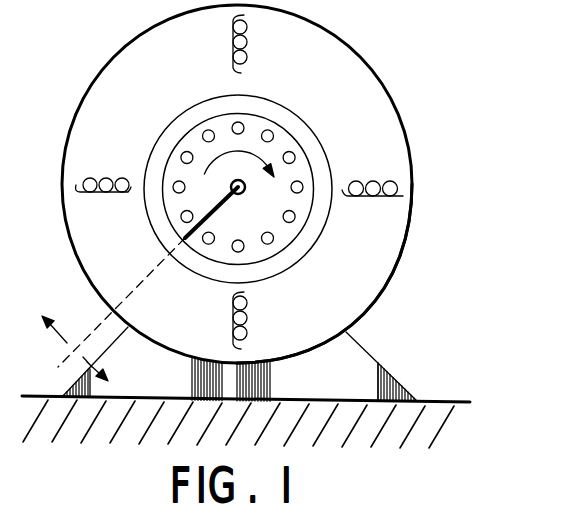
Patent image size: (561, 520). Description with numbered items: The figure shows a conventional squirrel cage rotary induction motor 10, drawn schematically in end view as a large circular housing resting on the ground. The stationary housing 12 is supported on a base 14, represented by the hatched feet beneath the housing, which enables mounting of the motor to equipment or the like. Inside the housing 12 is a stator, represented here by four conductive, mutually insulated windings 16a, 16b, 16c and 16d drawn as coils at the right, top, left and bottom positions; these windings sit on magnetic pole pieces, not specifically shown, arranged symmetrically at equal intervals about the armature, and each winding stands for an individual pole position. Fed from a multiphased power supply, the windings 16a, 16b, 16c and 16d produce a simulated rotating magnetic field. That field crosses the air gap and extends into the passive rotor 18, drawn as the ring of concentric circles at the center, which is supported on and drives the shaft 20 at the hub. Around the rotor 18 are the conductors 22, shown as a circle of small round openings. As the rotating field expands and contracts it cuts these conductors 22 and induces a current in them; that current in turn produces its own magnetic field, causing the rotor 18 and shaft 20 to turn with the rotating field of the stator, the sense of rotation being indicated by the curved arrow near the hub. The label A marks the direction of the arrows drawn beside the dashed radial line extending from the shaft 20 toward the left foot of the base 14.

The rotary induction motor 10 is at (403, 90).
The stationary housing 12 is at (395, 279).
The base 14 is at (370, 370).
The winding 16a is at (372, 197).
The winding 16b is at (248, 46).
The winding 16c is at (97, 179).
The winding 16d is at (247, 318).
The passive rotor 18 is at (285, 143).
The shaft 20 is at (246, 189).
The conductors 22 is at (239, 123).
The direction of displacement A is at (113, 313).